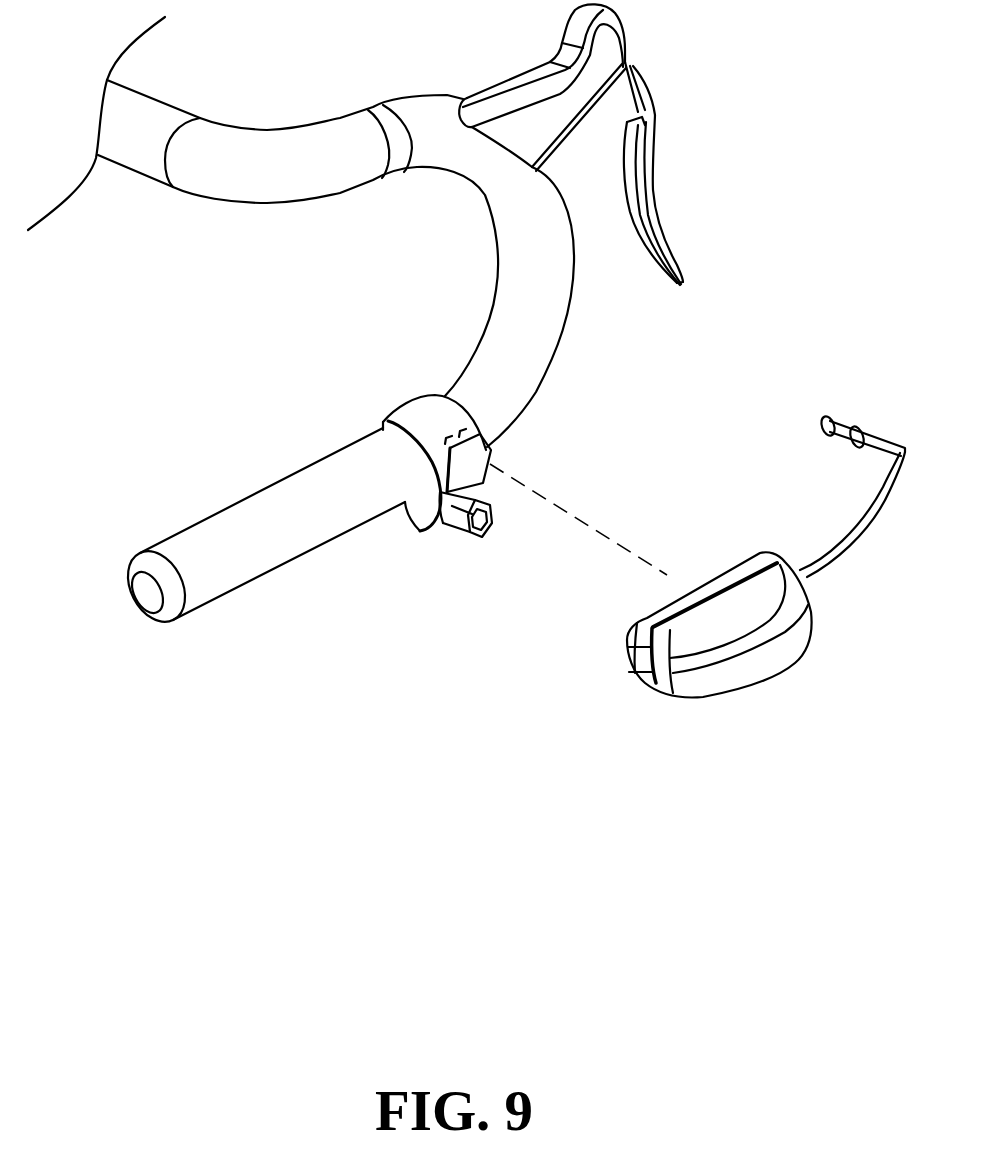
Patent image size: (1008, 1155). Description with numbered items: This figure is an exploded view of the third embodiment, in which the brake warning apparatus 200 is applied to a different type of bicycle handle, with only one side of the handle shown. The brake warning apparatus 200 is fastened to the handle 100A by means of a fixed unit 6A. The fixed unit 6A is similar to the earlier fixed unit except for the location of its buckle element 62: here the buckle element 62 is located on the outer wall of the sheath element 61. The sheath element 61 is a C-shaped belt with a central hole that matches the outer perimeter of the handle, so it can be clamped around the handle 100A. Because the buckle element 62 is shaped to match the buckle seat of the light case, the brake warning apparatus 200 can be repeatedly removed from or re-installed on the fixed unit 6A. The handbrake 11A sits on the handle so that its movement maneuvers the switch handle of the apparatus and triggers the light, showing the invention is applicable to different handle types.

The handle 100A is at (282, 535).
The handbrake 11A is at (638, 189).
The fixed unit 6A is at (565, 448).
The sheath element 61 is at (440, 410).
The buckle element 62 is at (473, 460).
The brake warning apparatus 200 is at (816, 700).